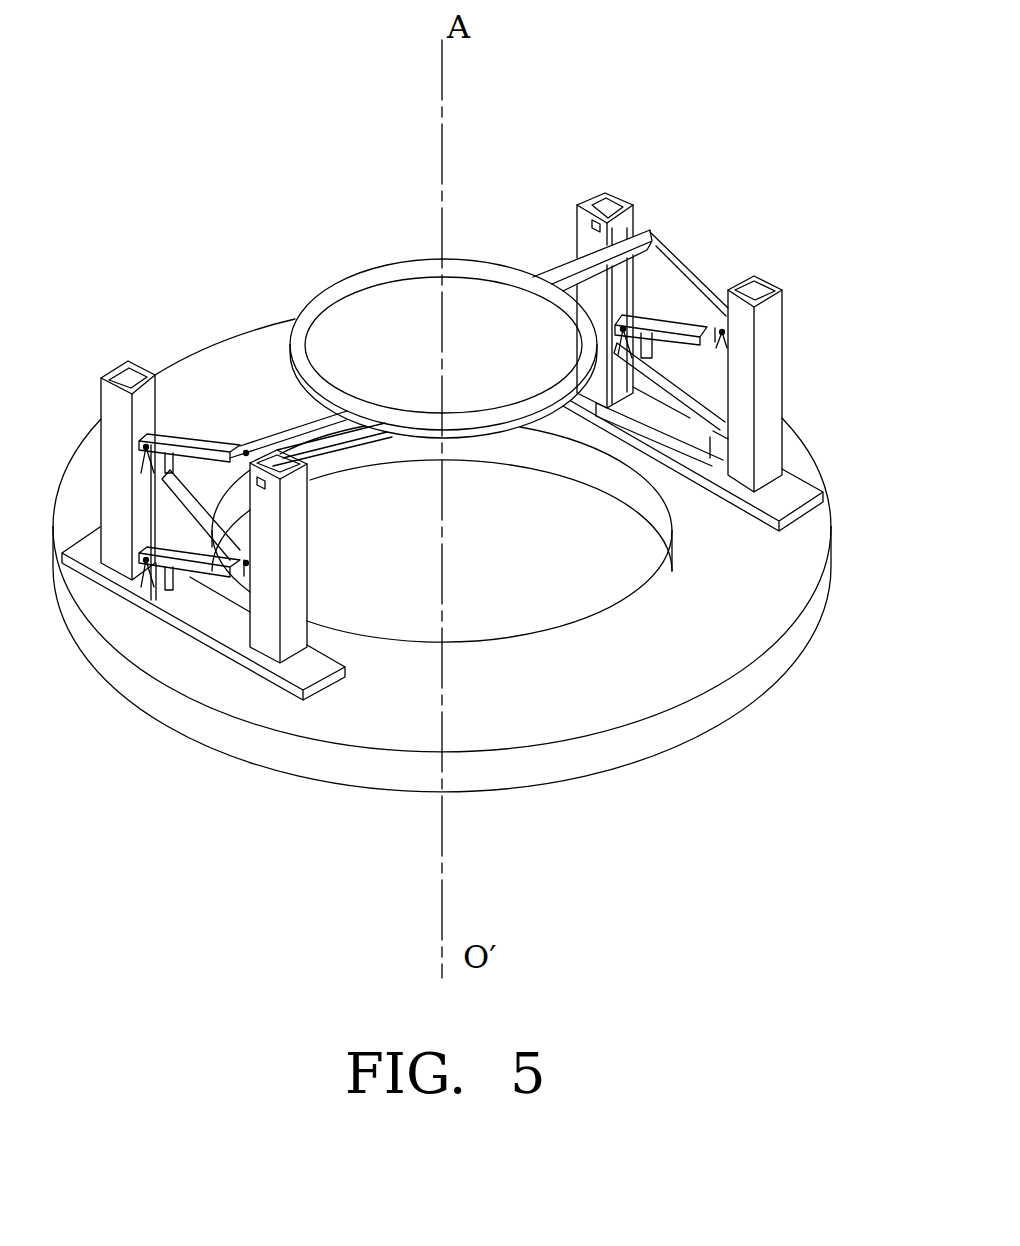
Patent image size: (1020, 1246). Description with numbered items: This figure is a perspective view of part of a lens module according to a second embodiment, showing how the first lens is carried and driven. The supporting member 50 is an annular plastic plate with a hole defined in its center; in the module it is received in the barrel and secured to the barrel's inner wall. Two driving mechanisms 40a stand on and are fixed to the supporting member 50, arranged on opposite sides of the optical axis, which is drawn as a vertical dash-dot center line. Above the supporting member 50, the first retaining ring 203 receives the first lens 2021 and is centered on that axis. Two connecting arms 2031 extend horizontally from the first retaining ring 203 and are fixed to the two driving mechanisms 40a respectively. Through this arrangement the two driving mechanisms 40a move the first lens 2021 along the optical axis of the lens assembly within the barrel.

The supporting member 50 is at (727, 632).
The first retaining ring 203 is at (405, 268).
The first lens 2021 is at (328, 335).
The connecting arm 2031 is at (558, 268).
The driving mechanism 40a is at (772, 362).